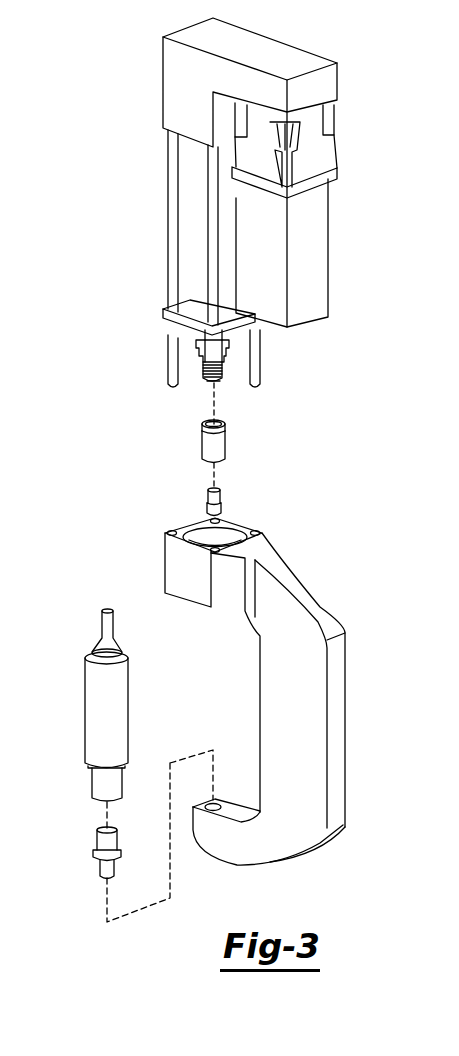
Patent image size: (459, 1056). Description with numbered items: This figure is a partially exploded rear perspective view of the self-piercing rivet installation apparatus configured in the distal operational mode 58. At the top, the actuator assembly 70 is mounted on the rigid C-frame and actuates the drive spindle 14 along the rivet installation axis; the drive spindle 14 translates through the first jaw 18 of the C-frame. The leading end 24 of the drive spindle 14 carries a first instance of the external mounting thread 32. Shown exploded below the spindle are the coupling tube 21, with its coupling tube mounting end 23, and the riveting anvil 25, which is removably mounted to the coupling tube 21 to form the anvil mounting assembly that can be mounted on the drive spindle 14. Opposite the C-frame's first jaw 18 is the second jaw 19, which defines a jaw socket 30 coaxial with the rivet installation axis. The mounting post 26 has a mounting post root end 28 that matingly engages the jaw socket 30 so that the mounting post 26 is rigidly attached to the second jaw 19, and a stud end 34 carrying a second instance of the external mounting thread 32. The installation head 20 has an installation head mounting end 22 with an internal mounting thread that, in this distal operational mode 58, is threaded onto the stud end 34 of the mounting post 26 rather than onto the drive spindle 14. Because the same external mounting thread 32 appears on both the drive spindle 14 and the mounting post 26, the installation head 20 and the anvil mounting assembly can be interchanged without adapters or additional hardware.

The actuator assembly 70 is at (133, 150).
The drive spindle 14 is at (205, 371).
The external mounting thread 32 is at (222, 371).
The leading end 24 is at (208, 384).
The coupling tube mounting end 23 is at (227, 421).
The coupling tube 21 is at (217, 446).
The riveting anvil 25 is at (222, 508).
The first jaw 18 is at (178, 570).
The second jaw 19 is at (205, 838).
The jaw socket 30 is at (216, 803).
The distal operational mode 58 is at (71, 696).
The installation head 20 is at (113, 702).
The installation head mounting end 22 is at (97, 808).
The stud end 34 is at (114, 832).
The mounting post 26 is at (93, 855).
The mounting post root end 28 is at (102, 878).